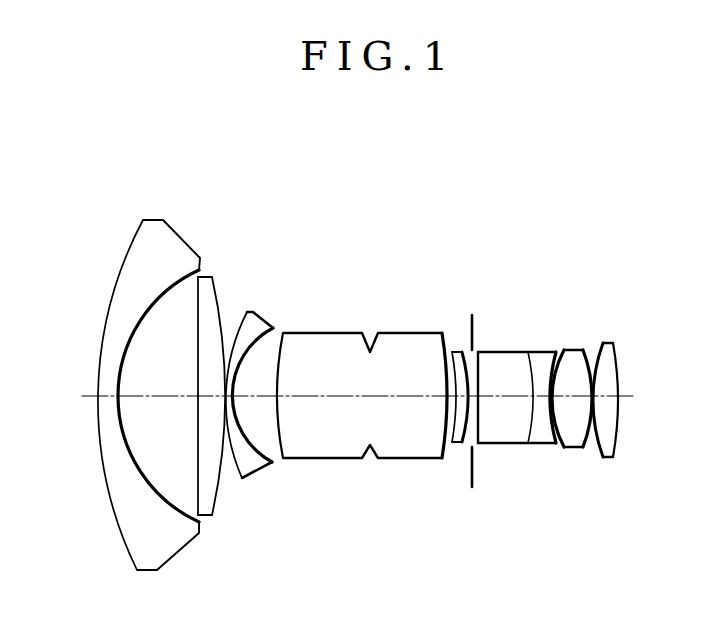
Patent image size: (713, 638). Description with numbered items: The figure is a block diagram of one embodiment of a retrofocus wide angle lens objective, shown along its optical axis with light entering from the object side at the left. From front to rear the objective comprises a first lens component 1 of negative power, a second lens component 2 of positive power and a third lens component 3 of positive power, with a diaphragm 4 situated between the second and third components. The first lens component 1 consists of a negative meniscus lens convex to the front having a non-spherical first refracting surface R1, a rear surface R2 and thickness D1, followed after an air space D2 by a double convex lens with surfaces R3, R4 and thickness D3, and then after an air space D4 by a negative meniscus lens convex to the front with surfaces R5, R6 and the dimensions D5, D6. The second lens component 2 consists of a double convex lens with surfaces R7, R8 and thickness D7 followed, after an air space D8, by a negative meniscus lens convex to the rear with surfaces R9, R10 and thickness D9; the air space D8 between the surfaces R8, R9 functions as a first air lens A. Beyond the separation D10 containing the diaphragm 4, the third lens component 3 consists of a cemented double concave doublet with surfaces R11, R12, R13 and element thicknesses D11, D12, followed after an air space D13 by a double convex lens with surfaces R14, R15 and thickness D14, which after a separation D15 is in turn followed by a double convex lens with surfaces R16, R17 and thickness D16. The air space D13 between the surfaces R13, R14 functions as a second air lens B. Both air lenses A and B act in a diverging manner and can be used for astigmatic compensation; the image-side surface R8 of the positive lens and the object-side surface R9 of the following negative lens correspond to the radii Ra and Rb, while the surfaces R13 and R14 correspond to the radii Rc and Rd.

The first lens component 1 is at (278, 193).
The second lens component 2 is at (471, 195).
The third lens component 3 is at (620, 195).
The diaphragm 4 is at (472, 488).
The first air lens A is at (467, 296).
The second air lens B is at (580, 296).
The thickness of first negative meniscus lens D1 is at (104, 394).
The air space D2 is at (161, 377).
The thickness of double convex lens D3 is at (213, 377).
The air space D4 is at (228, 393).
The thickness of negative meniscus lens D5 is at (236, 393).
The thickness/air space of negative meniscus lens D6 is at (262, 377).
The thickness of double convex lens D7 is at (365, 378).
The air space D8 is at (452, 396).
The thickness of negative meniscus lens D9 is at (461, 396).
The air space D10 is at (474, 396).
The thickness of first doublet element D11 is at (507, 383).
The thickness of second doublet element D12 is at (541, 396).
The air space D13 is at (554, 396).
The thickness of double convex lens D14 is at (581, 383).
The air space D15 is at (594, 396).
The thickness of rear double convex lens D16 is at (608, 396).
The first refracting surface R1 is at (121, 530).
The second refracting surface R2 is at (157, 492).
The third refracting surface R3 is at (197, 500).
The fourth refracting surface R4 is at (216, 497).
The fifth refracting surface R5 is at (238, 470).
The sixth refracting surface R6 is at (255, 443).
The seventh refracting surface R7 is at (281, 460).
The eighth refracting surface R8 is at (445, 455).
The ninth refracting surface R9 is at (453, 444).
The tenth refracting surface R10 is at (463, 444).
The eleventh refracting surface R11 is at (478, 446).
The twelfth refracting surface R12 is at (527, 444).
The thirteenth refracting surface R13 is at (553, 444).
The fourteenth refracting surface R14 is at (564, 448).
The fifteenth refracting surface R15 is at (585, 448).
The sixteenth refracting surface R16 is at (598, 446).
The seventeenth refracting surface R17 is at (615, 444).